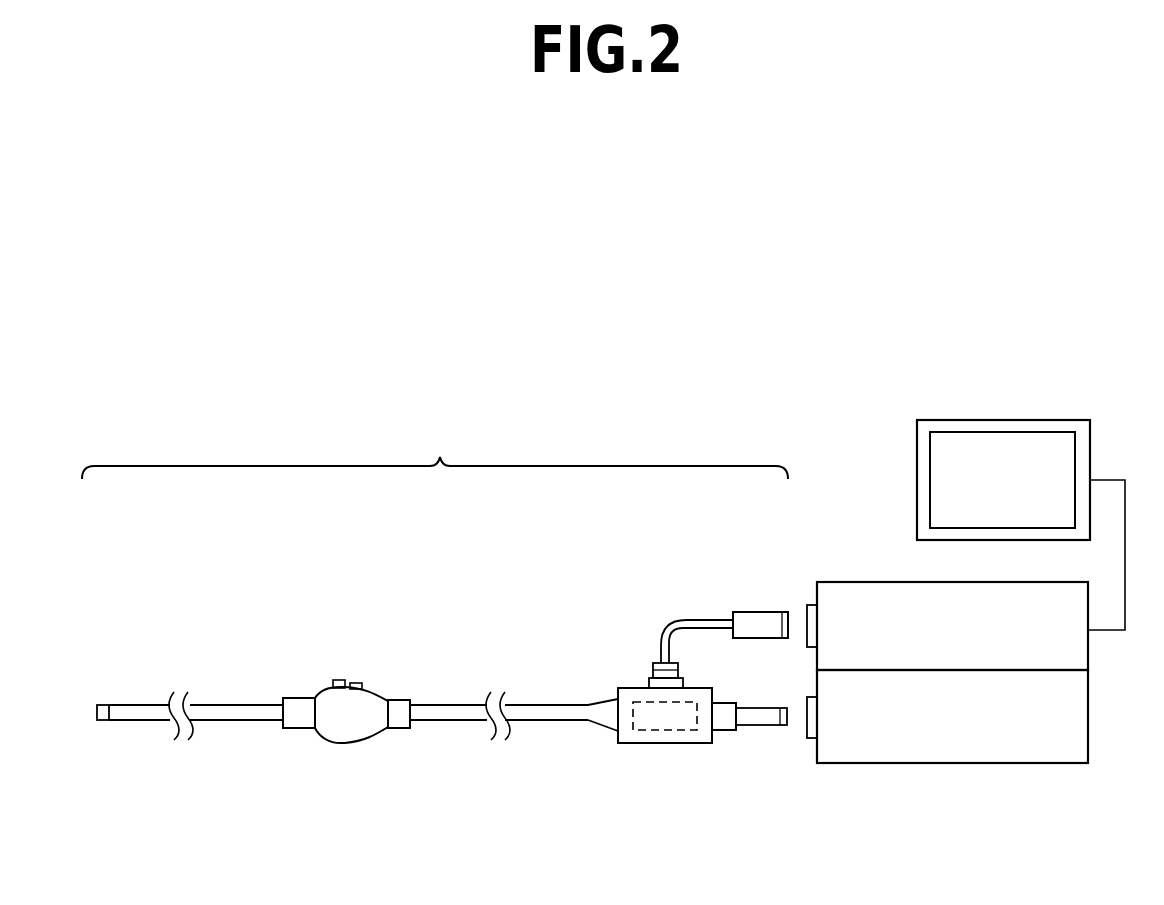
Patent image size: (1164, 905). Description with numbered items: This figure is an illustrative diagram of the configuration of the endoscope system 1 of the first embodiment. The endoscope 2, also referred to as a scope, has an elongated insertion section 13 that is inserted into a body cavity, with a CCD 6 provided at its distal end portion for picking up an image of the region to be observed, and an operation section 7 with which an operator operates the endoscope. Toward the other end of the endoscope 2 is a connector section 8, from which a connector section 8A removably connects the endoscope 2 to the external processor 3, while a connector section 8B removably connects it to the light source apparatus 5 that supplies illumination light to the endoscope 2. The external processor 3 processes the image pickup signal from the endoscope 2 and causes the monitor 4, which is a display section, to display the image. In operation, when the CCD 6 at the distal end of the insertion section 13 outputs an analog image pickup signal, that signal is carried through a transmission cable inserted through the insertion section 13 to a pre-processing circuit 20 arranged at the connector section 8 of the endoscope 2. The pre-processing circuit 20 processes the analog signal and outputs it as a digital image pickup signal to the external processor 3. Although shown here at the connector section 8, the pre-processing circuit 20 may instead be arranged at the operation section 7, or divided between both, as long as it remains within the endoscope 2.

The endoscope system 1 is at (578, 333).
The endoscope 2 is at (435, 449).
The external processor 3 is at (865, 581).
The monitor 4 is at (1003, 420).
The light source apparatus 5 is at (955, 764).
The CCD 6 is at (101, 726).
The operation section 7 is at (323, 688).
The connector section 8 is at (640, 606).
The connector section 8A is at (758, 612).
The connector section 8B is at (755, 735).
The insertion section 13 is at (222, 727).
The pre-processing circuit 20 is at (653, 746).